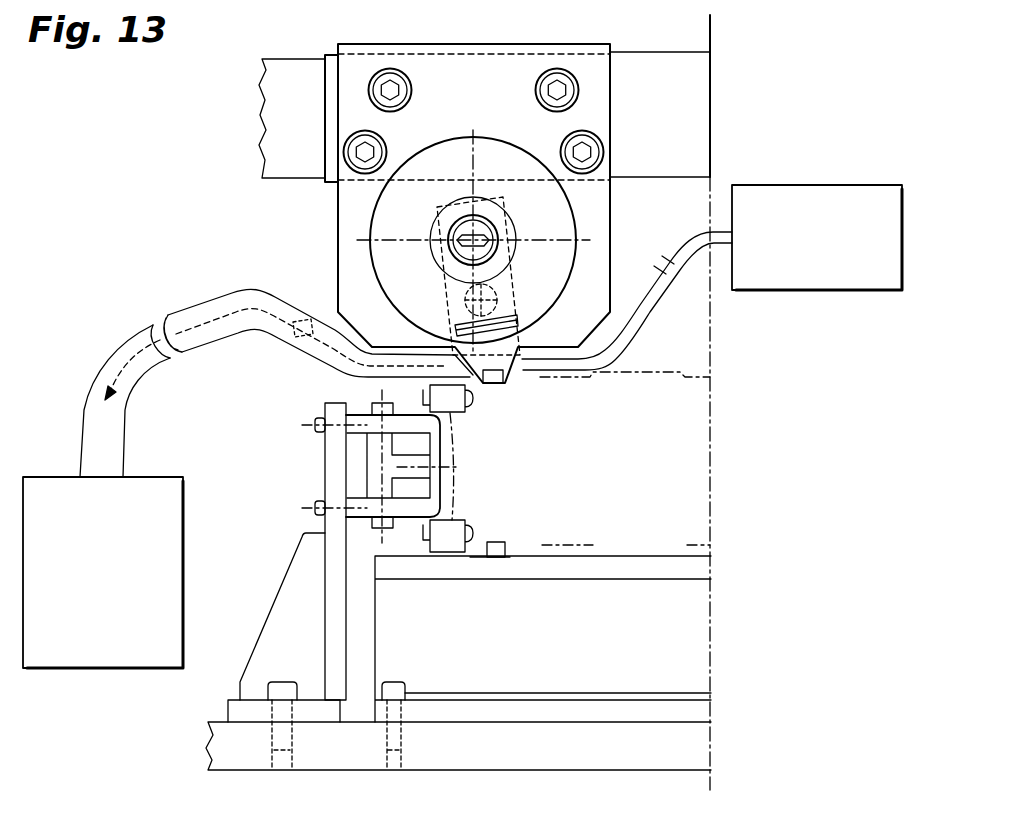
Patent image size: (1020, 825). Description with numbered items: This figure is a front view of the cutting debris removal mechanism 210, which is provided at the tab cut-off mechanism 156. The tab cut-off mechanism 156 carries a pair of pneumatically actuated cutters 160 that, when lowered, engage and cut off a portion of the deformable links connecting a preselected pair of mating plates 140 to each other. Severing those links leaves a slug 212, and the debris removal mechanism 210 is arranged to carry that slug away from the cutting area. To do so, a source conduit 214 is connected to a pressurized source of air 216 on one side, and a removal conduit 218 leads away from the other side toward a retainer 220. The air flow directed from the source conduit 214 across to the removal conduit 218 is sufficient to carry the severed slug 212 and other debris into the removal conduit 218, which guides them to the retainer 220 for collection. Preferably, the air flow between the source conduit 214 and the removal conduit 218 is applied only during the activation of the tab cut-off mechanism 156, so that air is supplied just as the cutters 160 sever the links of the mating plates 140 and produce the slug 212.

The mating plates 140 is at (570, 445).
The tab cut-off mechanism 156 is at (722, 90).
The pneumatically actuated cutters 160 is at (566, 229).
The cutting debris removal mechanism 210 is at (177, 268).
The slug 212 is at (302, 316).
The source conduit 214 is at (630, 338).
The pressurized source of air 216 is at (782, 185).
The removal conduit 218 is at (240, 336).
The retainer 220 is at (185, 488).